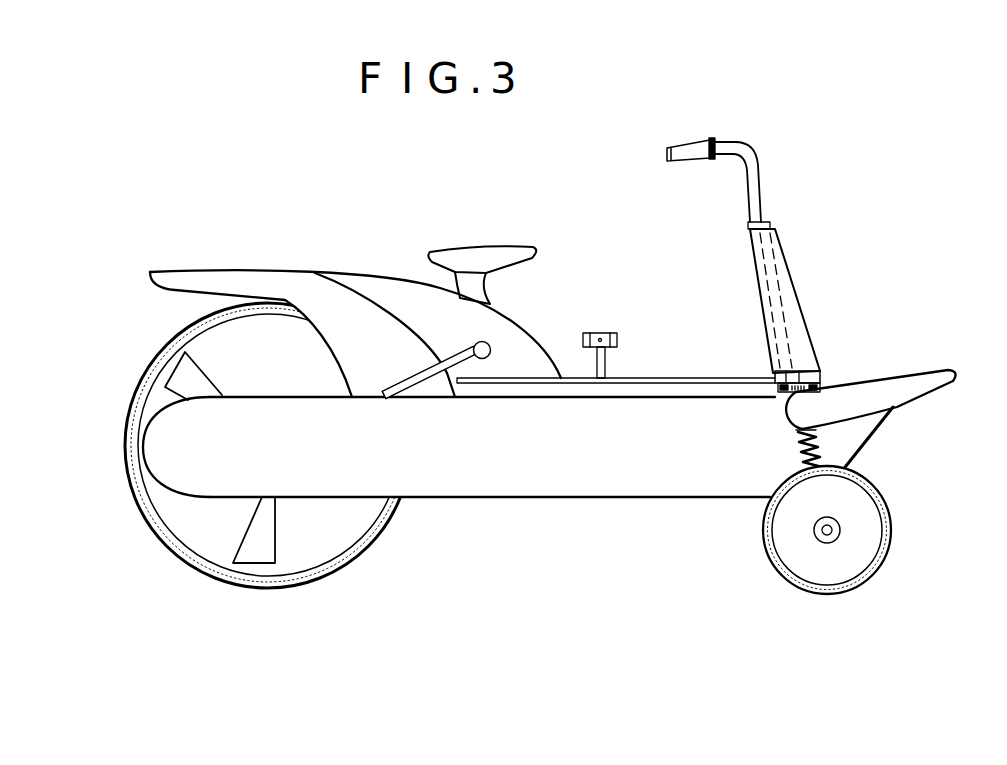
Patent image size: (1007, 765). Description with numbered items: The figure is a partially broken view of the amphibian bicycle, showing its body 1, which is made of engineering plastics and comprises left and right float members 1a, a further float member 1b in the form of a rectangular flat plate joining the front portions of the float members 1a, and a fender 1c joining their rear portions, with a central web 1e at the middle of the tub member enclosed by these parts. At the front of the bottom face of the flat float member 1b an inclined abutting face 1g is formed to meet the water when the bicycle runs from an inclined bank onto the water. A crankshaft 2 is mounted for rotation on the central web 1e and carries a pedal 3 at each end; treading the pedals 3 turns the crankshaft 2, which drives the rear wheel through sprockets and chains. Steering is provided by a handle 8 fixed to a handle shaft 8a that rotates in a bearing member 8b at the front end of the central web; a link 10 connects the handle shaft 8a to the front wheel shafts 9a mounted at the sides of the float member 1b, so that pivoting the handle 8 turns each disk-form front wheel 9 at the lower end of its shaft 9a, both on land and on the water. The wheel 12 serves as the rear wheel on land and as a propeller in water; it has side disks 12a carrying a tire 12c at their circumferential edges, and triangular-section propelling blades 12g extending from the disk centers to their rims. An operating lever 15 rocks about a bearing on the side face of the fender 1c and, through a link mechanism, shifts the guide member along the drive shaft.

The body 1 is at (538, 331).
The float member 1a is at (539, 500).
The float member 1b is at (910, 378).
The fender 1c is at (331, 290).
The web 1e is at (676, 378).
The abutting face 1g is at (940, 388).
The crankshaft 2 is at (607, 366).
The pedal 3 is at (603, 333).
The handle 8 is at (743, 147).
The handle shaft 8a is at (784, 327).
The bearing member 8b is at (788, 288).
The front wheel 9 is at (892, 530).
The front wheel shaft 9a is at (828, 440).
The link 10 is at (822, 371).
The wheel 12 is at (224, 584).
The disk 12a is at (368, 532).
The tire 12c is at (152, 532).
The propelling blade 12g is at (183, 372).
The operating lever 15 is at (465, 348).